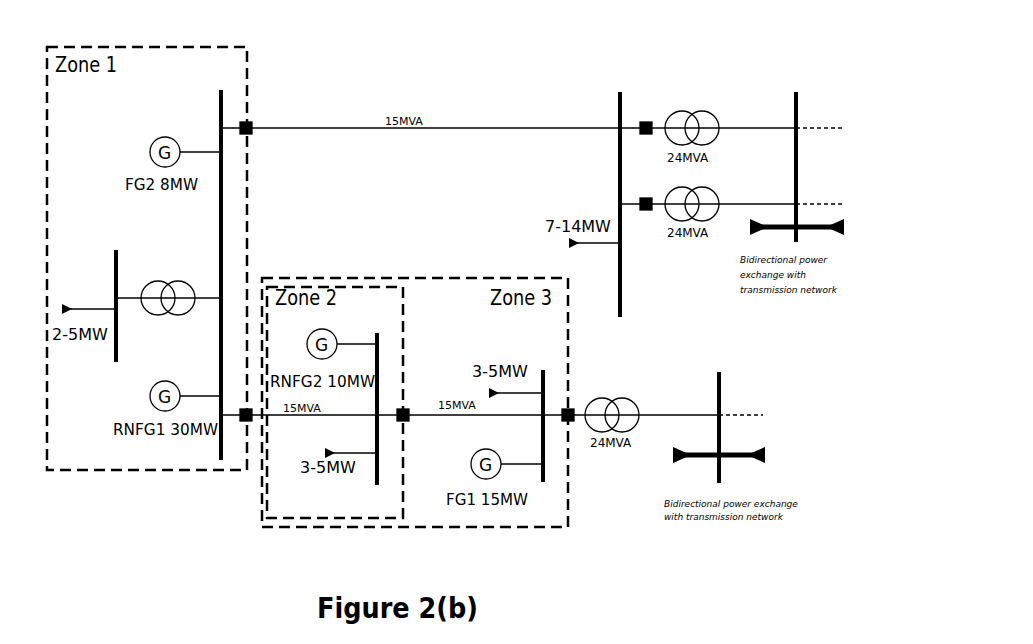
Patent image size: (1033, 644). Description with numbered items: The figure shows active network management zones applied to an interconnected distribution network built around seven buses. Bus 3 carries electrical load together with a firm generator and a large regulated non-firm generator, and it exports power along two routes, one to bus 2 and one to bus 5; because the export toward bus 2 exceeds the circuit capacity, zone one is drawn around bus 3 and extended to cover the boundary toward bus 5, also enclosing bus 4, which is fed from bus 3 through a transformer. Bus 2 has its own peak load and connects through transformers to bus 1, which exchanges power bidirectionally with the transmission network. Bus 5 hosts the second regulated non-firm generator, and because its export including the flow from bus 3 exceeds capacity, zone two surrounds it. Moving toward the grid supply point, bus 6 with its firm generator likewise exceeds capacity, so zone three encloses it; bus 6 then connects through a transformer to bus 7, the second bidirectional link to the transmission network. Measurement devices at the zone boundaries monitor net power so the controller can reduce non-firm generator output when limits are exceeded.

The bus 1 is at (796, 155).
The bus 2 is at (619, 191).
The bus 3 is at (220, 263).
The bus 4 is at (115, 293).
The bus 5 is at (376, 396).
The bus 6 is at (542, 413).
The bus 7 is at (718, 414).